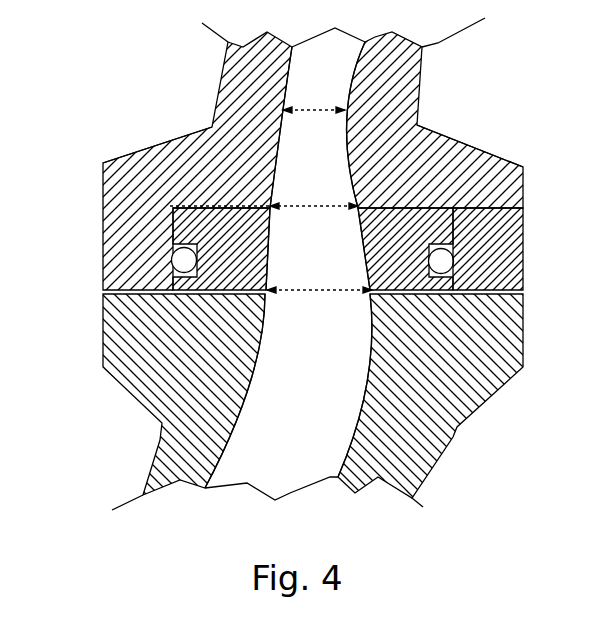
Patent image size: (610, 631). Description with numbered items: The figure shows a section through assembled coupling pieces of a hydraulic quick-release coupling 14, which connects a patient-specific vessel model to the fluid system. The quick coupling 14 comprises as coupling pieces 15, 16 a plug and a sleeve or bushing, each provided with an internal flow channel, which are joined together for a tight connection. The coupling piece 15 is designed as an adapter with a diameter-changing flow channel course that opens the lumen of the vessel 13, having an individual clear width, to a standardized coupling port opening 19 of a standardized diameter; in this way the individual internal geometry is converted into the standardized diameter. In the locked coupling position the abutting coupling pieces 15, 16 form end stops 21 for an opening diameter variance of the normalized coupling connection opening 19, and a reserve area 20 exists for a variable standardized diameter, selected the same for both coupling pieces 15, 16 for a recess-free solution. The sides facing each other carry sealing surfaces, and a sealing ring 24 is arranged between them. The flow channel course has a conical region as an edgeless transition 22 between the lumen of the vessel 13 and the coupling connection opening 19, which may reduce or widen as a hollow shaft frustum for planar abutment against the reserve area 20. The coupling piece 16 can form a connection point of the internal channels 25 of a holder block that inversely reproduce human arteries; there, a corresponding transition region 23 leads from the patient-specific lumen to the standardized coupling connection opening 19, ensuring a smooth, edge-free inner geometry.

The vessel 13 is at (400, 88).
The hydraulic quick-release coupling 14 is at (515, 230).
The coupling piece 15 is at (478, 153).
The coupling piece 16 is at (460, 397).
The standardized coupling port opening 19 is at (317, 211).
The reserve area 20 is at (200, 207).
The end stop 21 is at (187, 220).
The edgeless transition 22 is at (360, 148).
The transition region 23 is at (376, 264).
The sealing ring 24 is at (160, 294).
The internal channel 25 is at (275, 402).